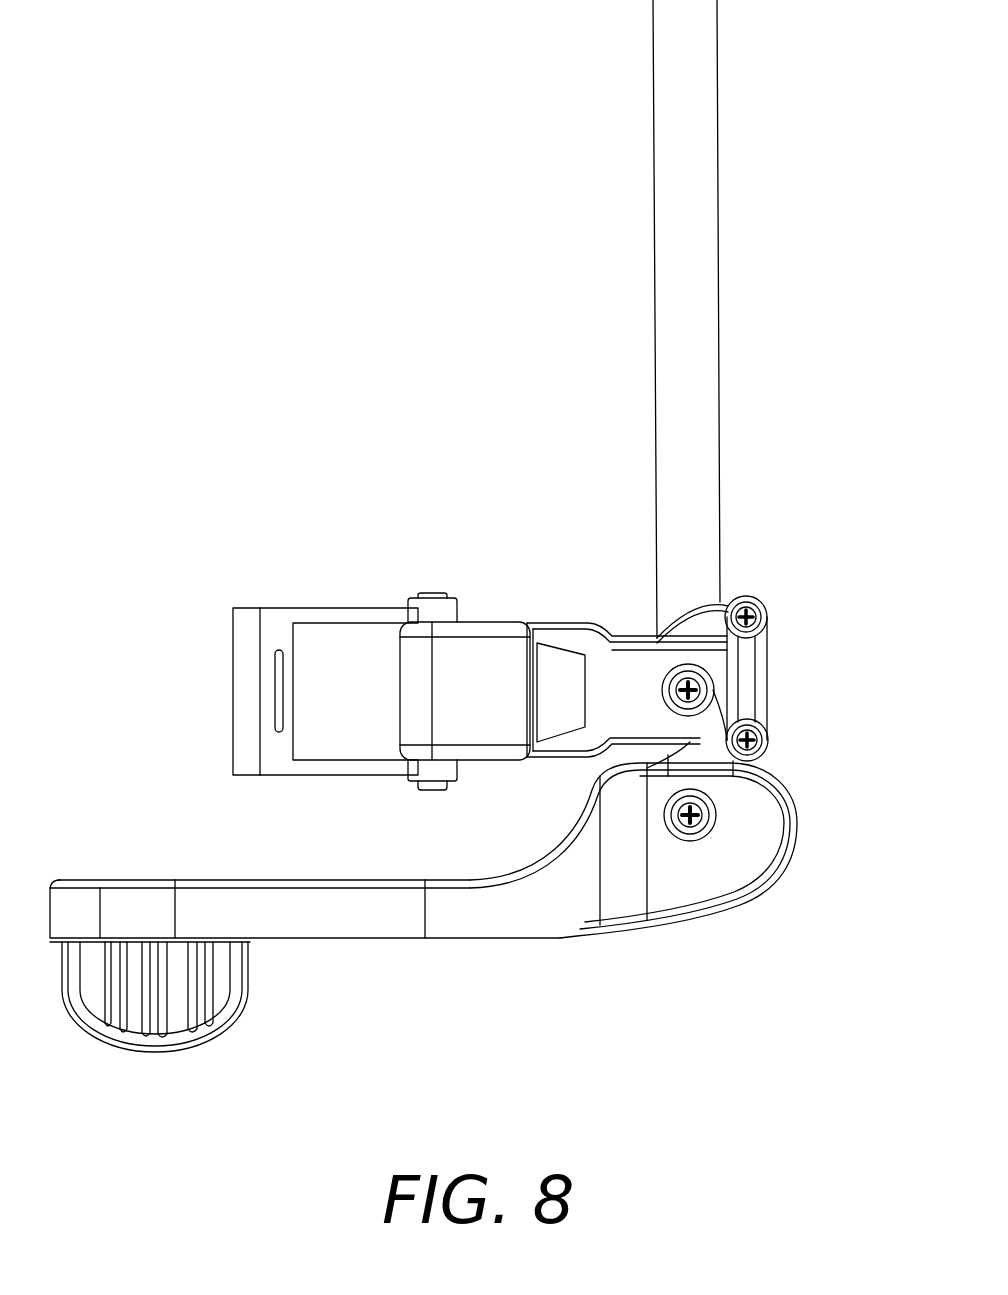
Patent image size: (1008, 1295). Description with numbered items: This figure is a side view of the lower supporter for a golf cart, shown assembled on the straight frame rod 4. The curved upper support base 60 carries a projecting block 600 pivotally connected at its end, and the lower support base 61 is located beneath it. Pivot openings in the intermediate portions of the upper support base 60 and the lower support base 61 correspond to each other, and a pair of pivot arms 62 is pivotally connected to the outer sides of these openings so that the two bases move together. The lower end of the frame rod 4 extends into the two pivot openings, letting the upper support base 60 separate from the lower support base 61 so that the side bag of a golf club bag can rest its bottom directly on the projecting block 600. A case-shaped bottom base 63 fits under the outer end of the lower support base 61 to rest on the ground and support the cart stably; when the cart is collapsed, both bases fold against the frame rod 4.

The frame rod 4 is at (695, 442).
The upper support base 60 is at (485, 653).
The projecting block 600 is at (328, 640).
The lower support base 61 is at (467, 922).
The pivot arms 62 is at (745, 682).
The bottom base 63 is at (178, 1015).